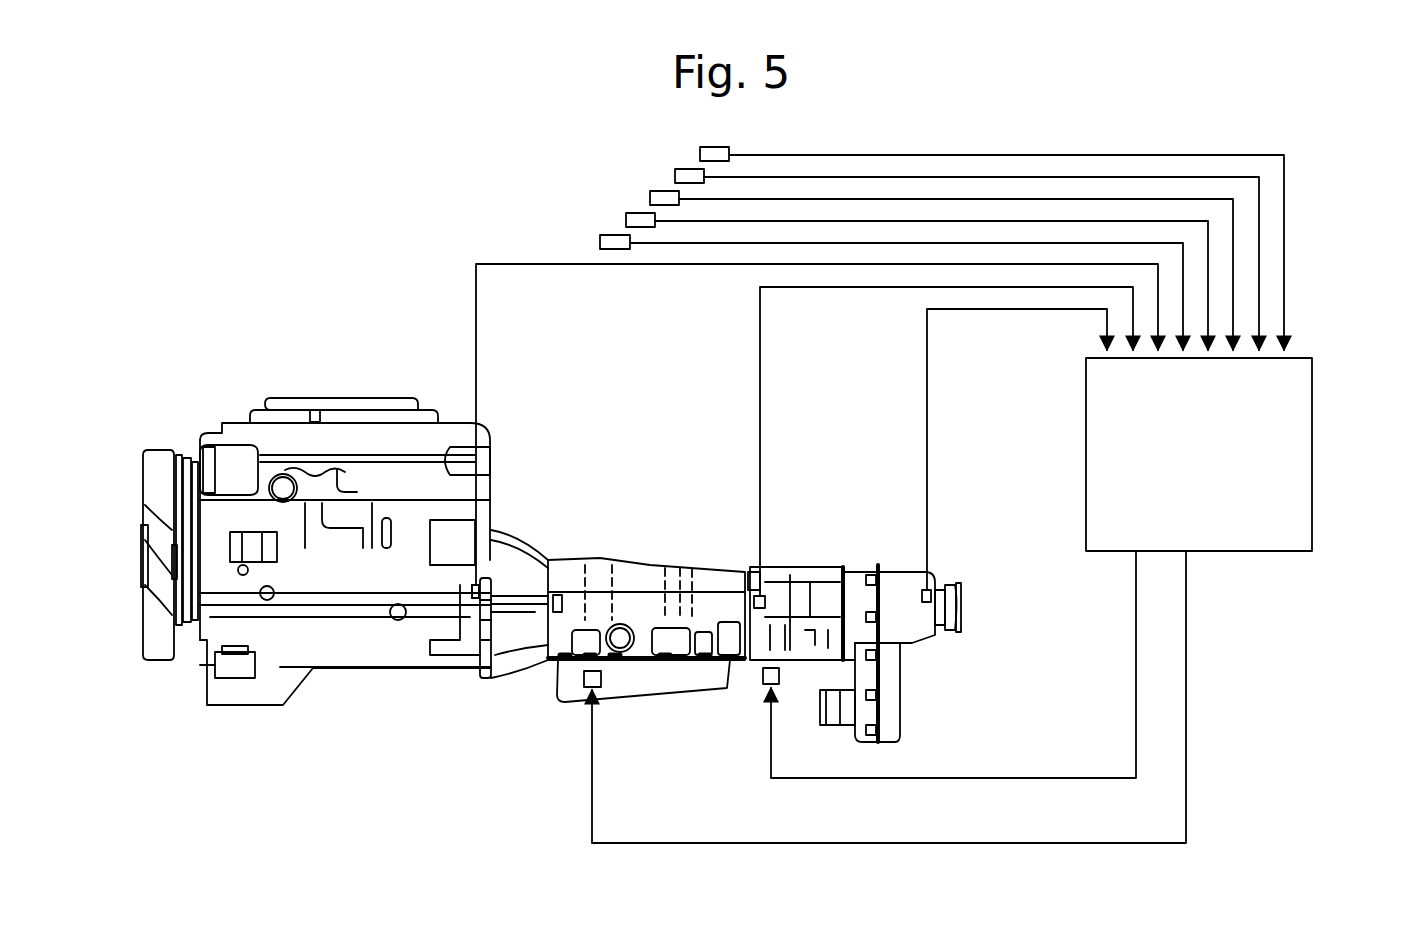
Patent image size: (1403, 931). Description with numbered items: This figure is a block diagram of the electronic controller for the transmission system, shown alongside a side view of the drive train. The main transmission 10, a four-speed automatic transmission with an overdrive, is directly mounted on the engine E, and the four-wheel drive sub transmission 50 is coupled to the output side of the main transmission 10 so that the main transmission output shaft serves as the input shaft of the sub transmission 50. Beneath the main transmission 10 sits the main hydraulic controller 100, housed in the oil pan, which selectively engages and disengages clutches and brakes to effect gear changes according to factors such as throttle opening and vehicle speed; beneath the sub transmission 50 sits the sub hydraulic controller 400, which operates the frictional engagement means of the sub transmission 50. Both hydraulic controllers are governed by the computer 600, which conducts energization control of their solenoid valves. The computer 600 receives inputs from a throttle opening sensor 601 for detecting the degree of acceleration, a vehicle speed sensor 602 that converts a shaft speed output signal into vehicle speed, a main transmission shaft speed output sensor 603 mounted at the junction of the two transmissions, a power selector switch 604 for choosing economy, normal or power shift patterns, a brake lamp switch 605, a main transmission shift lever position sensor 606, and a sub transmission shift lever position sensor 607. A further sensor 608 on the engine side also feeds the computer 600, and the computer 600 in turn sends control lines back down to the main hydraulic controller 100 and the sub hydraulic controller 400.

The engine E is at (315, 388).
The main transmission 10 is at (582, 527).
The four-wheel drive sub transmission 50 is at (829, 530).
The main hydraulic controller 100 is at (580, 683).
The sub hydraulic controller 400 is at (757, 684).
The computer 600 is at (1318, 356).
The throttle opening sensor 601 is at (700, 153).
The vehicle speed sensor 602 is at (937, 586).
The main transmission shaft speed output sensor 603 is at (728, 577).
The power selector switch 604 is at (675, 175).
The brake lamp switch 605 is at (650, 197).
The main transmission shift lever position sensor 606 is at (626, 219).
The sub transmission shift lever position sensor 607 is at (600, 241).
The engine speed sensor 608 is at (490, 578).